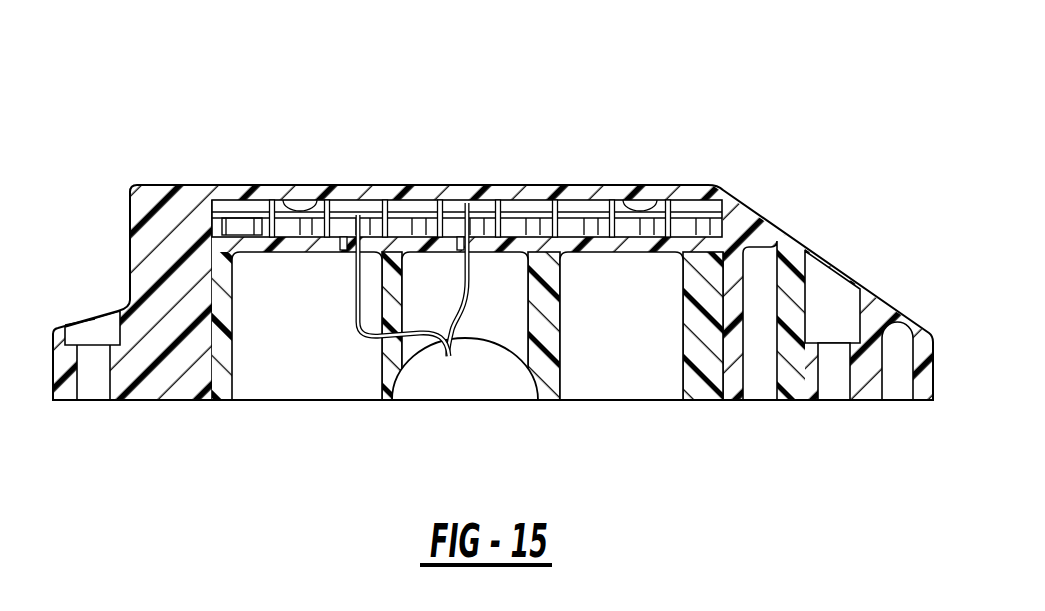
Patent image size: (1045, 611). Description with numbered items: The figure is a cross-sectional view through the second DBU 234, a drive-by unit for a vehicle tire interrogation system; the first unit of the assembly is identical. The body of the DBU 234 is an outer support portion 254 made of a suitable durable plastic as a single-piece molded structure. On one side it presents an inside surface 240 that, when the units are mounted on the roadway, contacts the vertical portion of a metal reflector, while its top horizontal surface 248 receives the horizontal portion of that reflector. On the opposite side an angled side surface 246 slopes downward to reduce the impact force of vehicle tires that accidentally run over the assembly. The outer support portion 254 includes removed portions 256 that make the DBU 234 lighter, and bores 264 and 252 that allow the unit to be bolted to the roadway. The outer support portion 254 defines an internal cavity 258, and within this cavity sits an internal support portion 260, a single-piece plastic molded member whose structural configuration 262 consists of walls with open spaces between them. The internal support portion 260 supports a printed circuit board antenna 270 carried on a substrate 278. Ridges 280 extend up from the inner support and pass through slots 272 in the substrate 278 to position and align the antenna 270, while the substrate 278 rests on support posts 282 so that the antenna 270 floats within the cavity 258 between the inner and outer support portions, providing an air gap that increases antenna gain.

The second DBU 234 is at (794, 178).
The inside surface 240 is at (130, 232).
The angled side surface 246 is at (795, 237).
The top horizontal surface 248 is at (539, 183).
The bore 252 is at (858, 303).
The outer support portion 254 is at (202, 197).
The removed portions 256 is at (878, 387).
The internal cavity 258 is at (212, 353).
The internal support portion 260 is at (553, 402).
The structural configuration 262 is at (382, 368).
The bore 264 is at (87, 323).
The printed circuit board antenna 270 is at (465, 196).
The slots 272 is at (315, 247).
The substrate 278 is at (427, 212).
The ridges 280 is at (378, 204).
The support posts 282 is at (240, 223).